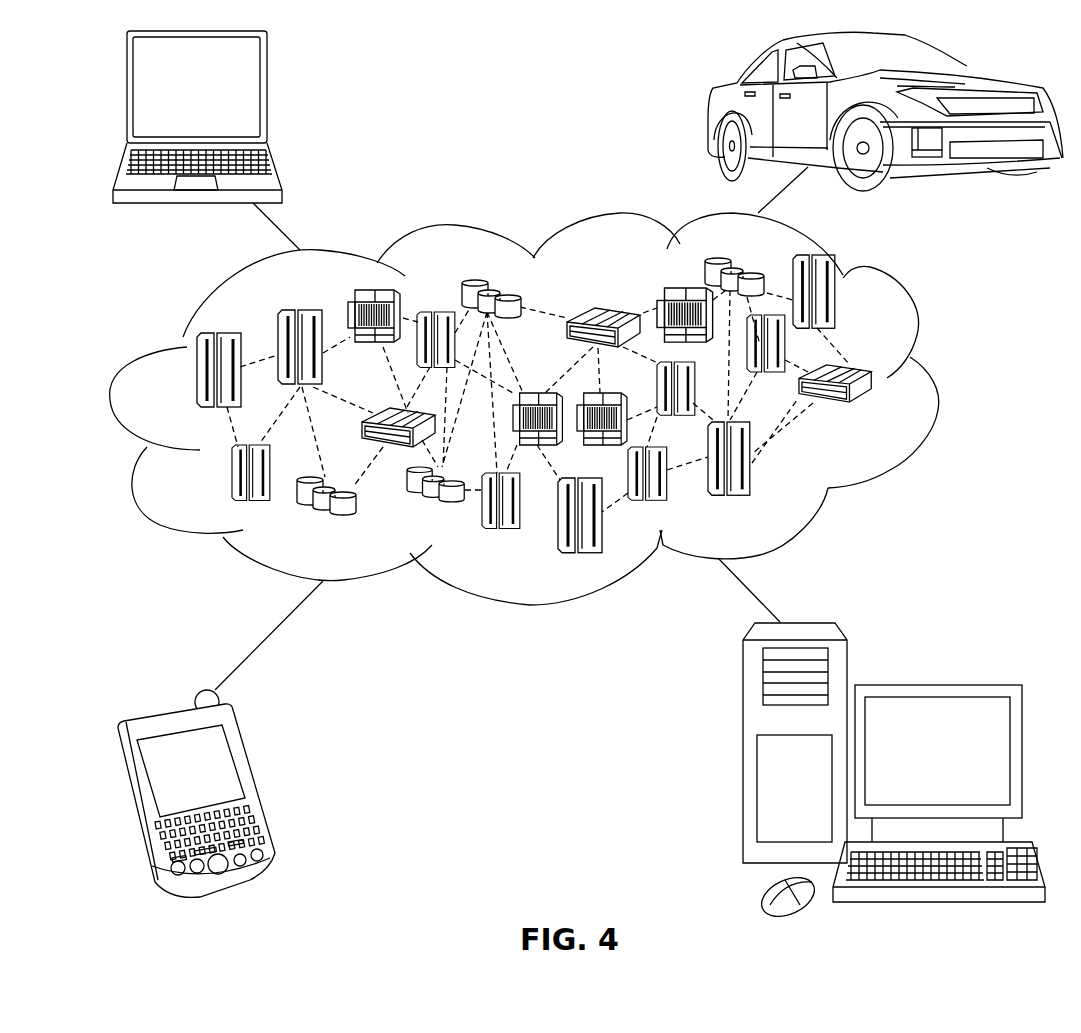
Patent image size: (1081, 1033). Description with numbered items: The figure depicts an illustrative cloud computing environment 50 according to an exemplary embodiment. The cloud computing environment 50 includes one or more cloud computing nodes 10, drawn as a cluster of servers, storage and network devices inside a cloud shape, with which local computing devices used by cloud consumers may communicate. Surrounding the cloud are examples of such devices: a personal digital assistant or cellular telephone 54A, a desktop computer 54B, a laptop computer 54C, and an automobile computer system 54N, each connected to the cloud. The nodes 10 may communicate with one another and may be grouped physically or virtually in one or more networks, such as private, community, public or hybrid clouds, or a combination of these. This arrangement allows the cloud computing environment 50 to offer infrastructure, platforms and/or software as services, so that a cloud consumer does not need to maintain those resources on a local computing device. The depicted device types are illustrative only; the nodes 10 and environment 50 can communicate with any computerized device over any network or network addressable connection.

The cloud computing node 10 is at (884, 415).
The cloud computing environment 50 is at (935, 382).
The personal digital assistant or cellular telephone 54A is at (257, 783).
The desktop computer 54B is at (933, 683).
The laptop computer 54C is at (267, 97).
The automobile computer system 54N is at (708, 110).